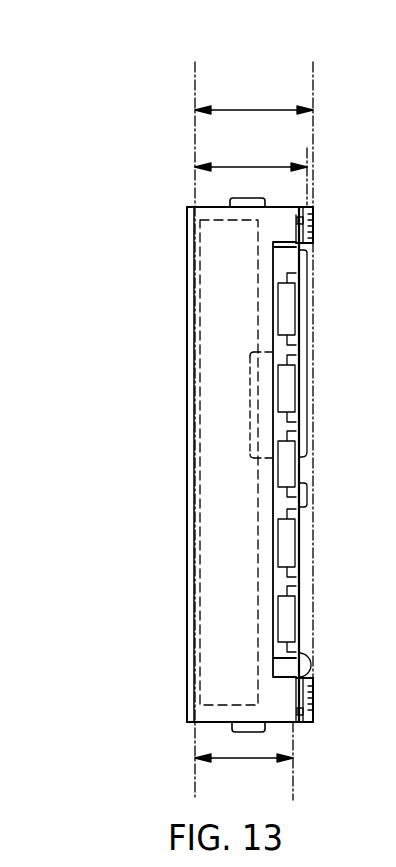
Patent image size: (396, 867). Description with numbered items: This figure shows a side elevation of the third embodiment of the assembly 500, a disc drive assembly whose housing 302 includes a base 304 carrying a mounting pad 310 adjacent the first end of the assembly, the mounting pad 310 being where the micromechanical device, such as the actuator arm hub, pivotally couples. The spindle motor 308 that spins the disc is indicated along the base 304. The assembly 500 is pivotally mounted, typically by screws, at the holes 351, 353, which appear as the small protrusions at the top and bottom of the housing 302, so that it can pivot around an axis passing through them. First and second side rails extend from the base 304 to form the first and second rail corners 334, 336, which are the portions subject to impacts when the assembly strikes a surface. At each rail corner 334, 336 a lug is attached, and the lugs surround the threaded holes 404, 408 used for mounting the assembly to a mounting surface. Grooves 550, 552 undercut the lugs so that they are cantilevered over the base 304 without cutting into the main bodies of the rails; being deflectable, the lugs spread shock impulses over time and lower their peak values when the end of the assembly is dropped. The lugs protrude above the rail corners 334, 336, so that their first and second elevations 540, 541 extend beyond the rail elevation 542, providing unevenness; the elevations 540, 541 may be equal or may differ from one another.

The assembly 500 is at (178, 242).
The housing 302 is at (186, 722).
The base 304 is at (264, 332).
The spindle motor 308 is at (309, 385).
The mounting pad 310 is at (309, 488).
The first rail corner 334 is at (314, 209).
The second rail corner 336 is at (314, 706).
The hole 351 is at (246, 200).
The hole 353 is at (245, 733).
The threaded hole 404 is at (315, 693).
The threaded hole 408 is at (313, 228).
The first elevation 540 is at (263, 108).
The second elevation 541 is at (258, 762).
The rail elevation 542 is at (262, 165).
The groove 550 is at (304, 215).
The groove 552 is at (299, 724).